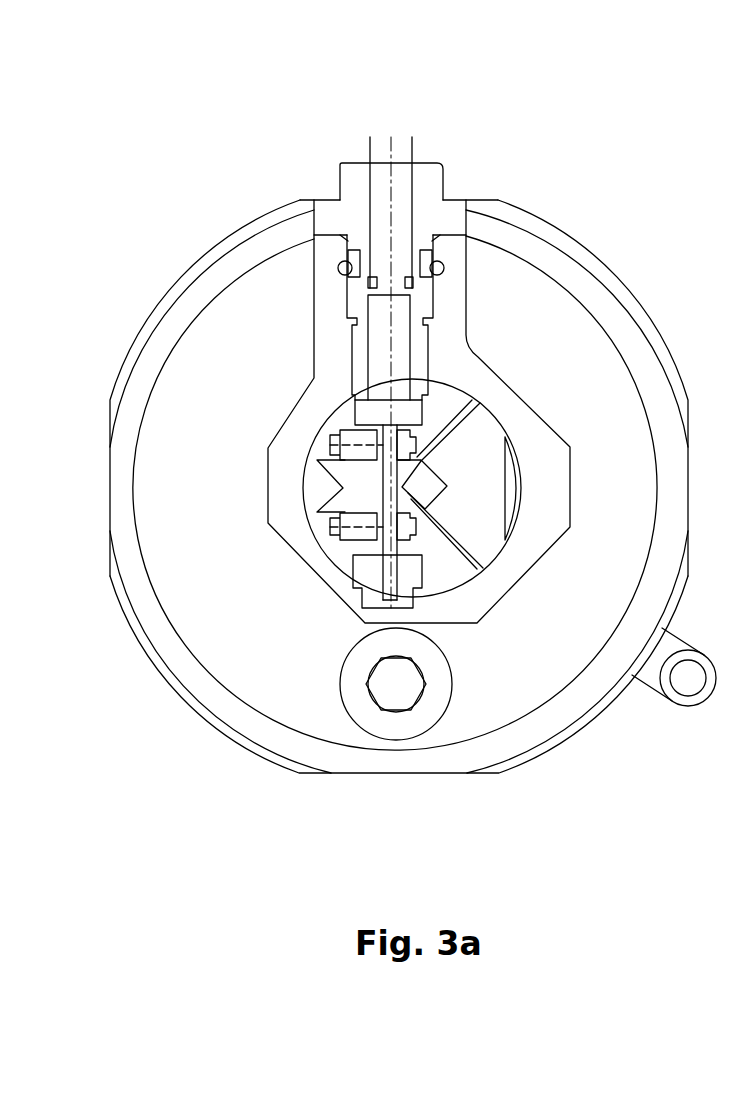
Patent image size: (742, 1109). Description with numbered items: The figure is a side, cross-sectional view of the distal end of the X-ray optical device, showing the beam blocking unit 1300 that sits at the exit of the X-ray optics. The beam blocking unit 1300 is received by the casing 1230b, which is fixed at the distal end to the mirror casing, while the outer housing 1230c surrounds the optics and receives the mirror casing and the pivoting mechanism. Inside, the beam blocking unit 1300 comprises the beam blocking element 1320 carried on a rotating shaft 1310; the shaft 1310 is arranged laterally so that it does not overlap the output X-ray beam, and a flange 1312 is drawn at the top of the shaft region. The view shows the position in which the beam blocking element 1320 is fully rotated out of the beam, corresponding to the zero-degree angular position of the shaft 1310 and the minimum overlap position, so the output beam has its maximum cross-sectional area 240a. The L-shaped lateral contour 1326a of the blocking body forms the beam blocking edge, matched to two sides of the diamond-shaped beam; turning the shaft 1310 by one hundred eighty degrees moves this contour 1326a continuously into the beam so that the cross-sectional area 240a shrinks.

The beam blocking unit 1300 is at (402, 163).
The tube flange 1312 is at (343, 165).
The rotating shaft 1310 is at (400, 222).
The casing 1230b is at (325, 325).
The cross-sectional area of the output X-ray beam 240a is at (420, 482).
The L-shaped lateral contour 1326a is at (340, 487).
The beam blocking element 1320 is at (340, 497).
The outer housing 1230c is at (555, 722).